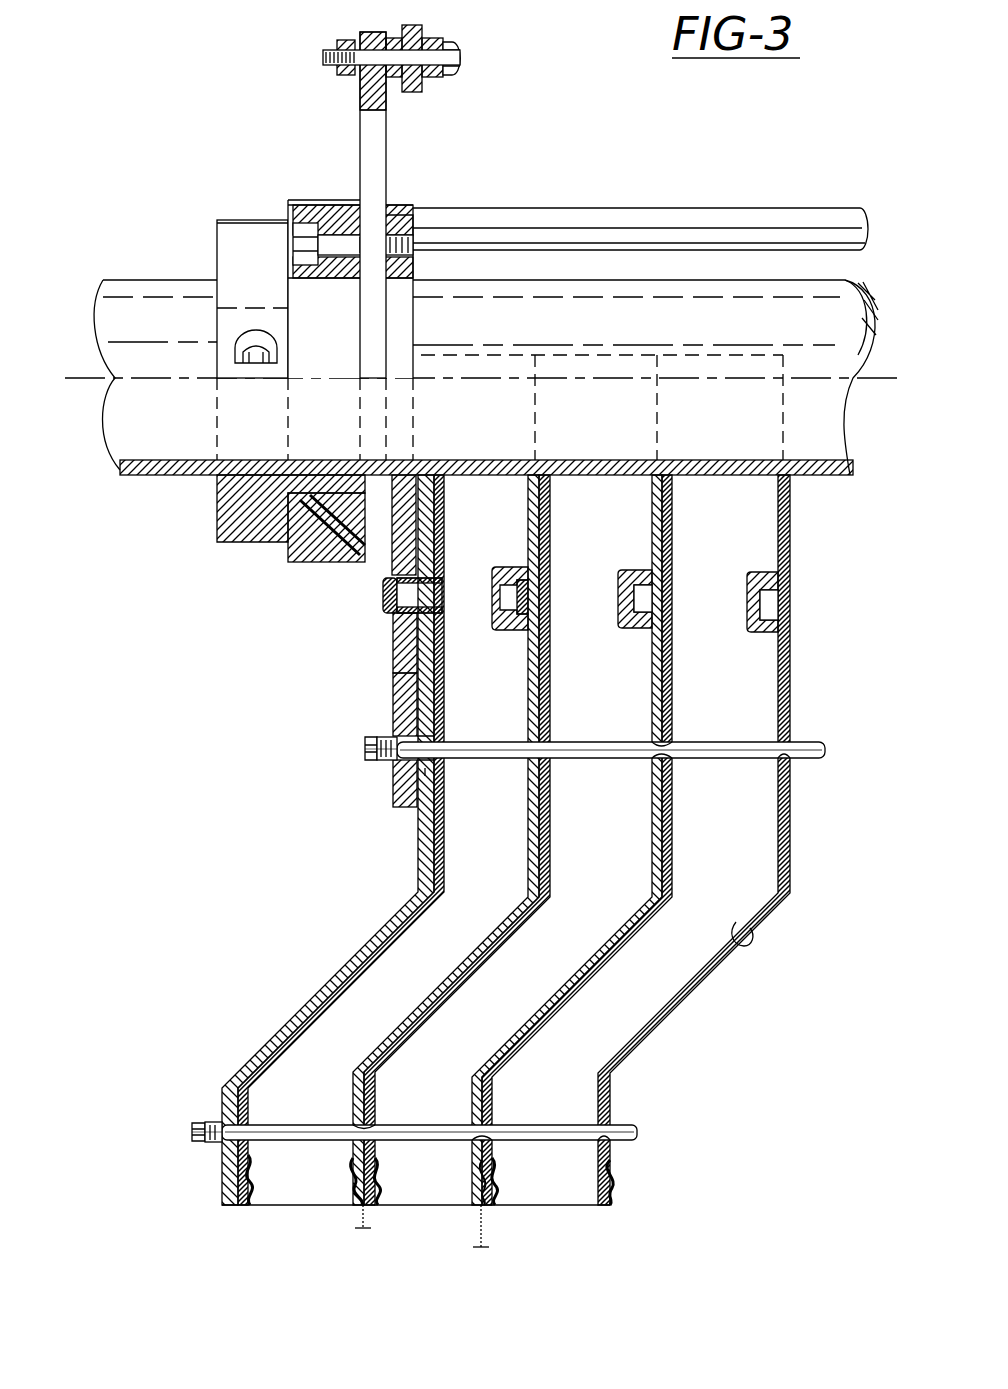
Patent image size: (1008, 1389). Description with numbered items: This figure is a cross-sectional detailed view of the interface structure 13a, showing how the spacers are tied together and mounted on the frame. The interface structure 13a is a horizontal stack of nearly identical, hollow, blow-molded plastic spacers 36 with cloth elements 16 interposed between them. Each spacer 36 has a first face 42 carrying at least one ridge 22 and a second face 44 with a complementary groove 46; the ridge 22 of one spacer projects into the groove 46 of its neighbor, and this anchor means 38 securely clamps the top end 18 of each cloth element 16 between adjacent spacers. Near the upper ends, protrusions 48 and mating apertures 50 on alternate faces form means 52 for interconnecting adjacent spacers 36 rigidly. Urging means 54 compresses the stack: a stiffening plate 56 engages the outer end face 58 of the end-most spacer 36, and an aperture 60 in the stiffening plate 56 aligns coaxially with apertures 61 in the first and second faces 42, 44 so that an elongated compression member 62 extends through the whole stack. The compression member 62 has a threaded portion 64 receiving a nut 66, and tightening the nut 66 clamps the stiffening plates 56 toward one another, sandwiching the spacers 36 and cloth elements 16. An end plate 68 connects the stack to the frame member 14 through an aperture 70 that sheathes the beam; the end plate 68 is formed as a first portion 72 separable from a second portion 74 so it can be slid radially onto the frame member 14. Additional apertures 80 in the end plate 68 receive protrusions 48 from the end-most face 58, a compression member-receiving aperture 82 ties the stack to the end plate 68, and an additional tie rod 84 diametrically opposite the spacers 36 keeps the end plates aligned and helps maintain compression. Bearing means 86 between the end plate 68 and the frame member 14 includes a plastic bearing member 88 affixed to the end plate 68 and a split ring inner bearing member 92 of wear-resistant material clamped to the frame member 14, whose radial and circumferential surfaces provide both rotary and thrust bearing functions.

The interface structure 13a is at (365, 890).
The frame member 14 is at (112, 287).
The cloth element 16 is at (357, 1222).
The top end 18 is at (337, 1140).
The ridge 22 is at (613, 1173).
The spacer 36 is at (765, 843).
The anchor means 38 is at (460, 1168).
The first face 42 is at (740, 935).
The second face 44 is at (580, 975).
The groove 46 is at (240, 1178).
The protrusion 48 is at (383, 590).
The aperture 50 is at (787, 587).
The means for interconnecting adjacent spacers 52 is at (617, 570).
The urging means 54 is at (642, 737).
The stiffening plate 56 is at (337, 970).
The outer end face 58 is at (395, 940).
The aperture 60 is at (440, 747).
The aperture 61 is at (672, 756).
The compression member 62 is at (820, 740).
The threaded portion 64 is at (366, 742).
The nut 66 is at (378, 730).
The end plate 68 is at (393, 693).
The aperture 70 is at (400, 473).
The first portion 72 is at (367, 143).
The second portion 74 is at (393, 645).
The aperture 80 is at (443, 592).
The compression member-receiving aperture 82 is at (427, 773).
The tie rod 84 is at (655, 208).
The bearing means 86 is at (223, 163).
The plastic bearing member 88 is at (310, 563).
The split ring inner bearing member 92 is at (228, 545).